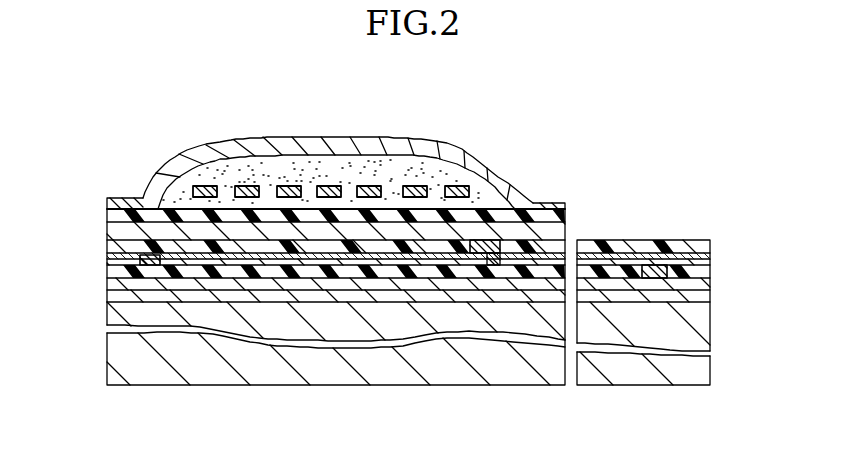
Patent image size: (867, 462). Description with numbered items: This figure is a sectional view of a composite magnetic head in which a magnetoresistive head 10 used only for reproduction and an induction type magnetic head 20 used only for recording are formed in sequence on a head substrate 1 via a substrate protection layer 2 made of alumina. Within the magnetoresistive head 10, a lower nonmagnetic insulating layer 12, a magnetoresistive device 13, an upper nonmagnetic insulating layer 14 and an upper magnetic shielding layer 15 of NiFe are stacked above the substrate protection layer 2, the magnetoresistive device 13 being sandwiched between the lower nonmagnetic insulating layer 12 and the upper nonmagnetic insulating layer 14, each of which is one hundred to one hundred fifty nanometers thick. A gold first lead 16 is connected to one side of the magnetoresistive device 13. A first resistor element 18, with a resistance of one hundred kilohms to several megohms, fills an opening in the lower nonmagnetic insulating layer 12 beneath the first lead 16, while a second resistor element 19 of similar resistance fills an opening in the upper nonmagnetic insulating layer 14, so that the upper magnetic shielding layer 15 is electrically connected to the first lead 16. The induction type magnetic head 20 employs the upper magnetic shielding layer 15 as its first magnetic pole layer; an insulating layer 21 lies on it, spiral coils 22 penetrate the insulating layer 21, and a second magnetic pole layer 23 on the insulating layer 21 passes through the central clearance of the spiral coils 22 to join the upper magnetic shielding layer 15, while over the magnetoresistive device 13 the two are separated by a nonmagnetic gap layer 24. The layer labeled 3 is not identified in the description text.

The head substrate 1 is at (683, 320).
The substrate protection layer 2 is at (697, 293).
The lower layer 3 is at (700, 283).
The magnetoresistive head 10 is at (100, 210).
The lower nonmagnetic insulating layer 12 is at (330, 270).
The magnetoresistive device 13 is at (142, 268).
The upper nonmagnetic insulating layer 14 is at (463, 240).
The upper magnetic shielding layer 15 is at (545, 232).
The first lead 16 is at (243, 265).
The first resistor element 18 is at (648, 268).
The second resistor element 19 is at (497, 258).
The induction type magnetic head 20 is at (577, 140).
The insulating layer 21 is at (268, 172).
The spiral coils 22 is at (460, 183).
The second magnetic pole layer 23 is at (358, 145).
The nonmagnetic gap layer 24 is at (160, 213).